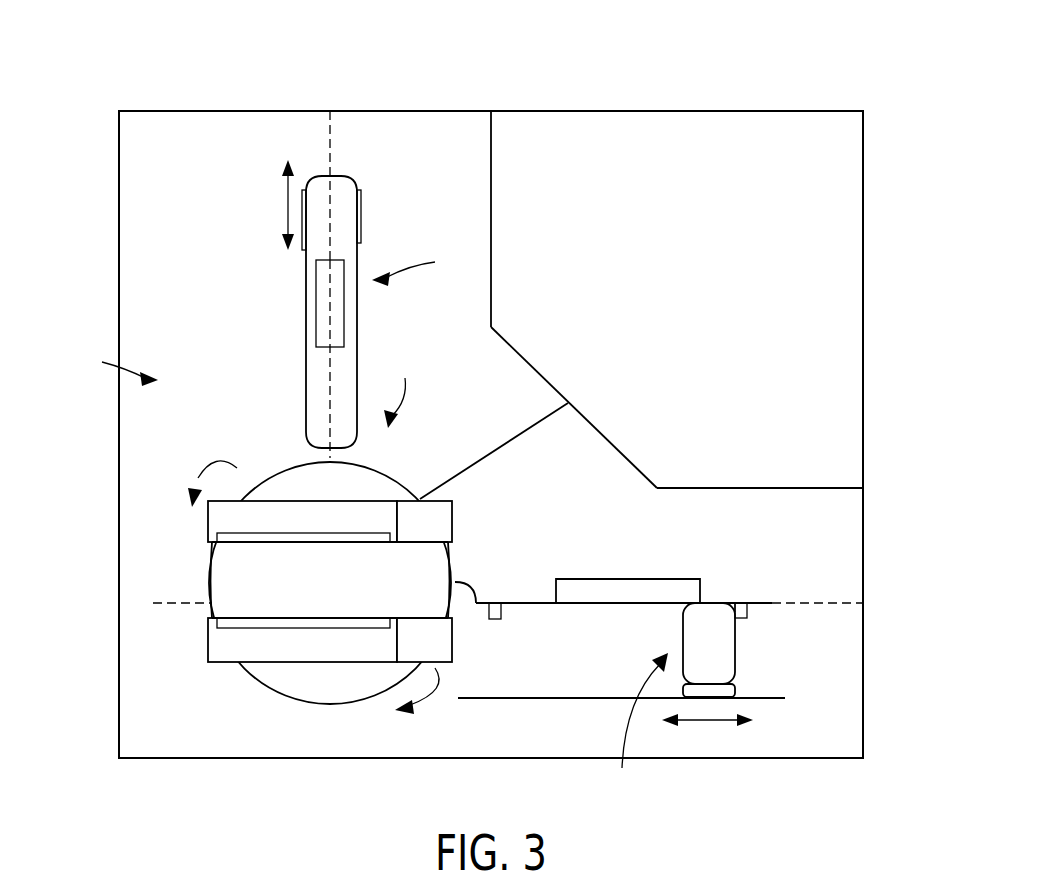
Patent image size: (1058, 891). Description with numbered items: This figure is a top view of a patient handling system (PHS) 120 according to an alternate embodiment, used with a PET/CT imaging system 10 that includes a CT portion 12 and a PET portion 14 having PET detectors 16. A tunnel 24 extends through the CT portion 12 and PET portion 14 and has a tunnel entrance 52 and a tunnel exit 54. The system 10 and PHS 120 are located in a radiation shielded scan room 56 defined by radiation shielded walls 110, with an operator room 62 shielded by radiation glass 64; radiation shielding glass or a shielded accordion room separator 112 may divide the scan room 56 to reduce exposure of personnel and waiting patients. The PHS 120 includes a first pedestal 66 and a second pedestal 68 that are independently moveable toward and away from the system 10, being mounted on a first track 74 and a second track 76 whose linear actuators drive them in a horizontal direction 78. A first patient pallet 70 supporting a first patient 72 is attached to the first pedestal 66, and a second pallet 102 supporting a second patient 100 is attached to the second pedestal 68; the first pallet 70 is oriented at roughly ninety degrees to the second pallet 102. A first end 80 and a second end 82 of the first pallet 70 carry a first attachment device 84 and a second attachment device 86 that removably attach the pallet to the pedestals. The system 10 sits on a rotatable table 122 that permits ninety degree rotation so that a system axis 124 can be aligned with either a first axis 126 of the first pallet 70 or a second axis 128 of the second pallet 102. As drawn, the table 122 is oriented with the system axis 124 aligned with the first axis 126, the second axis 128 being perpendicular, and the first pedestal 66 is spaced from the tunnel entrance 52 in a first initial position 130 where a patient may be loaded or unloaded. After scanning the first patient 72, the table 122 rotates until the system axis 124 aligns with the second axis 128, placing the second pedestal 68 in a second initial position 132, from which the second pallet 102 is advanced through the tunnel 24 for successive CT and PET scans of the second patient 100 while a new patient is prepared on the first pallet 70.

The PET/CT imaging system 10 is at (399, 386).
The CT portion 12 is at (447, 512).
The PET portion 14 is at (262, 512).
The PET detectors 16 is at (290, 532).
The tunnel 24 is at (316, 588).
The tunnel entrance 52 is at (445, 548).
The tunnel exit 54 is at (213, 576).
The scan room 56 is at (838, 540).
The operator room 62 is at (838, 158).
The radiation glass 64 is at (608, 437).
The first pedestal 66 is at (722, 663).
The second pedestal 68 is at (362, 200).
The first patient pallet 70 is at (645, 607).
The first patient 72 is at (612, 592).
The first track 74 is at (527, 700).
The second track 76 is at (334, 118).
The horizontal direction 78 is at (286, 208).
The first end of first pallet 80 is at (742, 603).
The second end of first pallet 82 is at (455, 582).
The first attachment device 84 is at (733, 603).
The second attachment device 86 is at (503, 612).
The second patient 100 is at (323, 312).
The second pallet 102 is at (320, 385).
The radiation shielded walls 110 is at (548, 110).
The room separator 112 is at (525, 433).
The patient handling system 120 is at (113, 365).
The rotatable table 122 is at (288, 672).
The system axis 124 is at (183, 603).
The first axis 126 is at (870, 600).
The second axis 128 is at (334, 160).
The first initial position 130 is at (638, 731).
The second initial position 132 is at (414, 264).